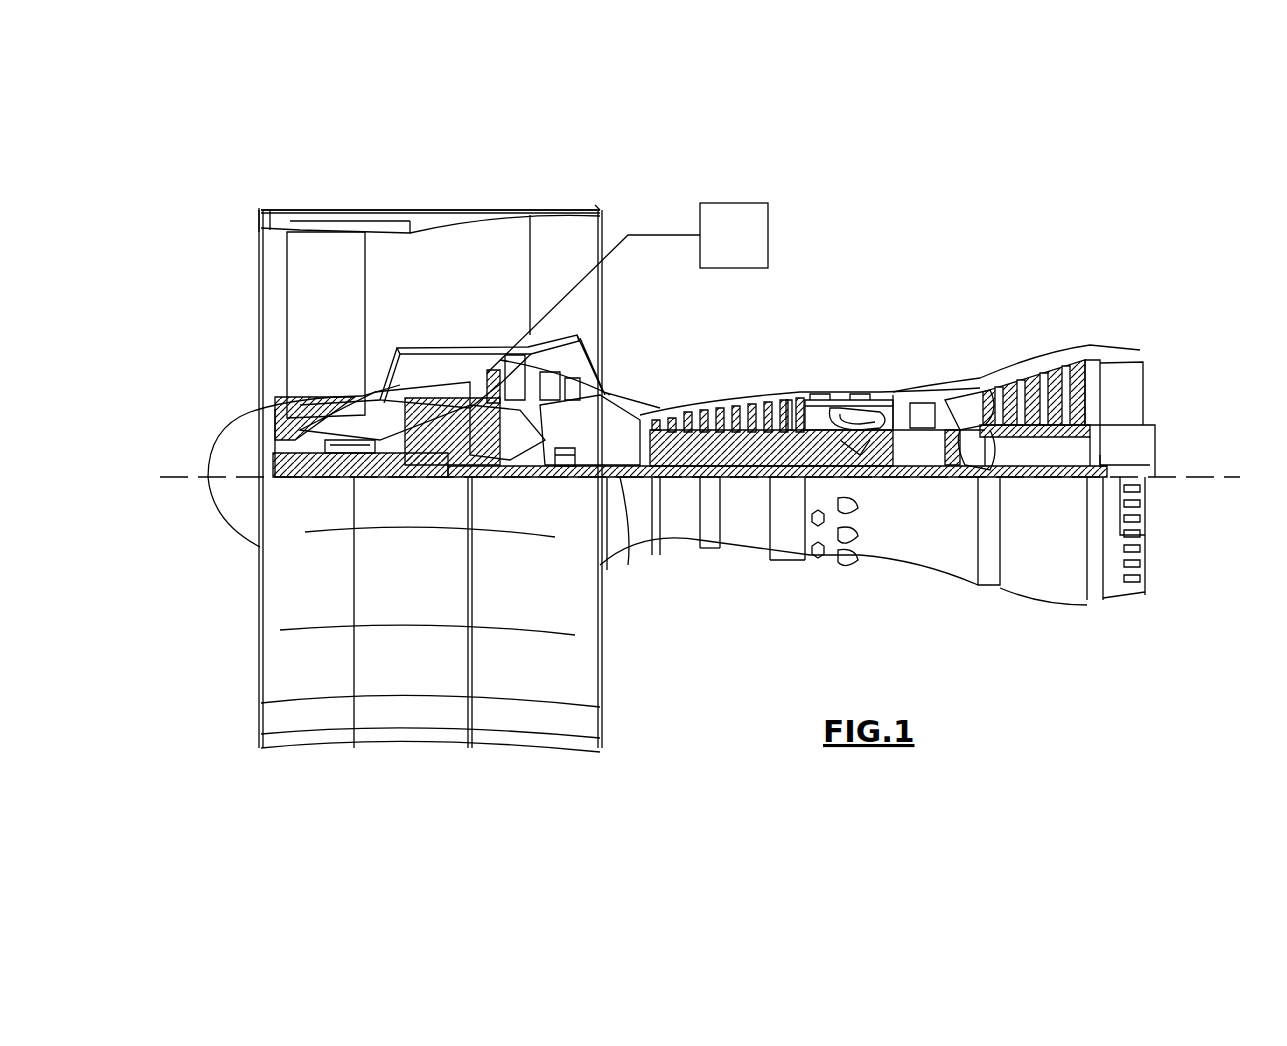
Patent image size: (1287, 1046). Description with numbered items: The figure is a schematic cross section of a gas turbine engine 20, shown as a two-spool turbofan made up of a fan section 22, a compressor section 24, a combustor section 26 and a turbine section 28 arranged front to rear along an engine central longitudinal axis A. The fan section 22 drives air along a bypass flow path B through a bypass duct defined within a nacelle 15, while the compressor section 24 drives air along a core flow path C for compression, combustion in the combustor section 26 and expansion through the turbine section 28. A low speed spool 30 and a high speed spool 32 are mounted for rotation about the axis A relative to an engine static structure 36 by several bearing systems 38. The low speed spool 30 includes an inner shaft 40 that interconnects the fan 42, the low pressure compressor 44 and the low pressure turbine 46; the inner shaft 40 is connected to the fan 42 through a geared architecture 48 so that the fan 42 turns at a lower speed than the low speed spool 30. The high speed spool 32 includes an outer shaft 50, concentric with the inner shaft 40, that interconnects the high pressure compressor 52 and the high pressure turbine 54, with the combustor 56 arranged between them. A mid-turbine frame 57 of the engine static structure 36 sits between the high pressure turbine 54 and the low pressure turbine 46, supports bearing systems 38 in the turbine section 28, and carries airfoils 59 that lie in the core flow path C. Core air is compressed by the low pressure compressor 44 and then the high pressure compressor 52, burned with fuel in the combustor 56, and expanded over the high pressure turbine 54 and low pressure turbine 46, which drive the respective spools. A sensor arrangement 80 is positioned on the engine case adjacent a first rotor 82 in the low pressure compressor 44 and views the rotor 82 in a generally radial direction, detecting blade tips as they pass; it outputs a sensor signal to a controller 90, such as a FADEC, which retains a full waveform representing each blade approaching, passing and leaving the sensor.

The gas turbine engine 20 is at (681, 447).
The fan section 22 is at (365, 200).
The nacelle 15 is at (430, 210).
The fan 42 is at (326, 325).
The compressor section 24 is at (810, 403).
The combustor section 26 is at (856, 378).
The turbine section 28 is at (1024, 383).
The low speed spool 30 is at (748, 482).
The high speed spool 32 is at (790, 420).
The engine static structure 36 is at (786, 562).
The bearing systems 38 is at (562, 477).
The inner shaft 40 is at (628, 490).
The low pressure compressor 44 is at (560, 385).
The low pressure turbine 46 is at (1040, 375).
The geared architecture 48 is at (437, 462).
The outer shaft 50 is at (862, 456).
The high pressure compressor 52 is at (720, 440).
The high pressure turbine 54 is at (915, 403).
The combustor 56 is at (858, 415).
The mid-turbine frame 57 is at (960, 397).
The airfoils 59 is at (985, 452).
The sensor arrangement 80 is at (465, 395).
The first rotor 82 is at (492, 372).
The controller 90 is at (627, 288).
The engine central longitudinal axis A is at (1240, 477).
The bypass flow path B is at (398, 280).
The core flow path C is at (443, 383).